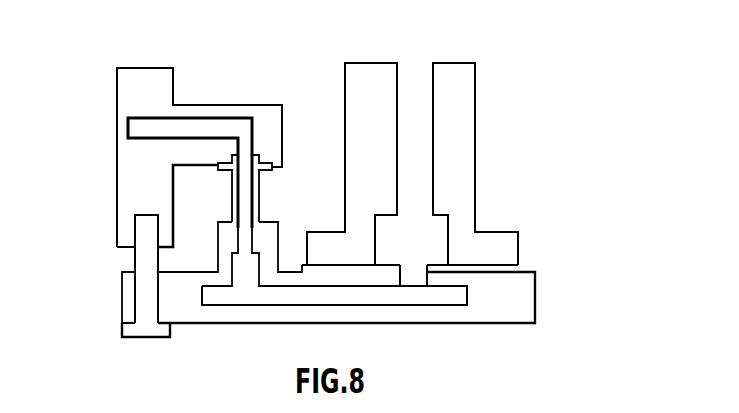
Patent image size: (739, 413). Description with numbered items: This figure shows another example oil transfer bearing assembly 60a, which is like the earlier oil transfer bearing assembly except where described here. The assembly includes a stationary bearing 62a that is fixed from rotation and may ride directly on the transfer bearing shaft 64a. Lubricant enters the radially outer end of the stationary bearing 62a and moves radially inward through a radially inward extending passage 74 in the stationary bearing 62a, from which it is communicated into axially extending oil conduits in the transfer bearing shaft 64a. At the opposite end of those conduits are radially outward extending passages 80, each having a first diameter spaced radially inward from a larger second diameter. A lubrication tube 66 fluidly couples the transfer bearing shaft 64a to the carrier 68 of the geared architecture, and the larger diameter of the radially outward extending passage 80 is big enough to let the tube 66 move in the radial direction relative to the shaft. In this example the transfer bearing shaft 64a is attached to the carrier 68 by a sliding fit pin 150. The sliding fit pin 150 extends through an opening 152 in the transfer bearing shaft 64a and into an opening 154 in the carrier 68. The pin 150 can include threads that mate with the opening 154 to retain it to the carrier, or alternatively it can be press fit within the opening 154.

The oil transfer bearing assembly 60a is at (507, 65).
The stationary bearing 62a is at (475, 117).
The transfer bearing shaft 64a is at (497, 313).
The lubrication tube 66 is at (259, 183).
The carrier 68 is at (212, 104).
The radially inward extending passage 74 is at (417, 168).
The radially outward extending passages 80 is at (242, 244).
The sliding fit pin 150 is at (135, 262).
The opening 152 is at (157, 310).
The opening 154 is at (135, 233).